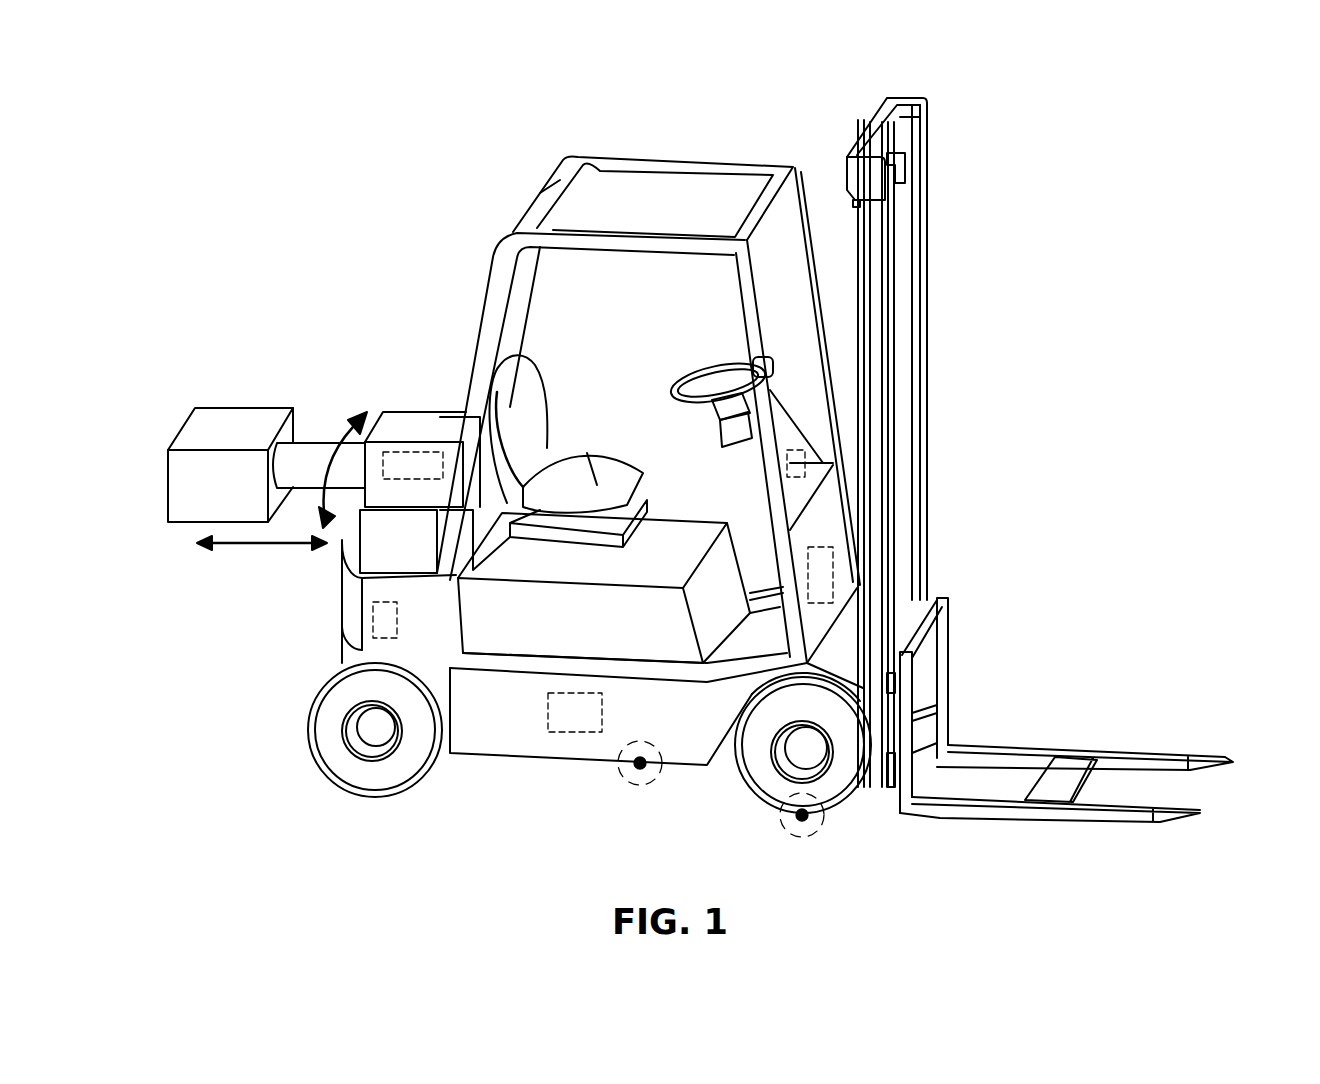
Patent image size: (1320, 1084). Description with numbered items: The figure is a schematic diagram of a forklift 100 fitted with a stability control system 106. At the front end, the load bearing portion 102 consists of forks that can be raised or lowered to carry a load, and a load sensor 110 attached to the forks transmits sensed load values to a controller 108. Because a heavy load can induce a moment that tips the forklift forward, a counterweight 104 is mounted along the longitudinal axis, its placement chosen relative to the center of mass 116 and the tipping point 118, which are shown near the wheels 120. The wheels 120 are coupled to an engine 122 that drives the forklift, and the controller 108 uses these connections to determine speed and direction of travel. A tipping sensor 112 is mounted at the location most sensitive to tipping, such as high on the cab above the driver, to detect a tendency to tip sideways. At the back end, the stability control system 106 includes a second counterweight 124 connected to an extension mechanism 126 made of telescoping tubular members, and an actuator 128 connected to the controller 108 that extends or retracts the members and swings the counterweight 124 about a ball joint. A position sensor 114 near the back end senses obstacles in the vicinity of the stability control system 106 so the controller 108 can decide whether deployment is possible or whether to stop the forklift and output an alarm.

The forklift 100 is at (484, 116).
The load bearing portion 102 is at (1098, 823).
The counterweight 104 is at (450, 408).
The stability control system 106 is at (333, 351).
The controller 108 is at (845, 578).
The load sensor 110 is at (1080, 765).
The tipping sensor 112 is at (790, 467).
The position sensor 114 is at (373, 618).
The center of mass 116 is at (630, 785).
The tipping point 118 is at (815, 830).
The wheels 120 is at (380, 797).
The engine 122 is at (575, 735).
The counterweight 124 is at (265, 408).
The extension mechanism 126 is at (328, 442).
The actuator 128 is at (413, 450).